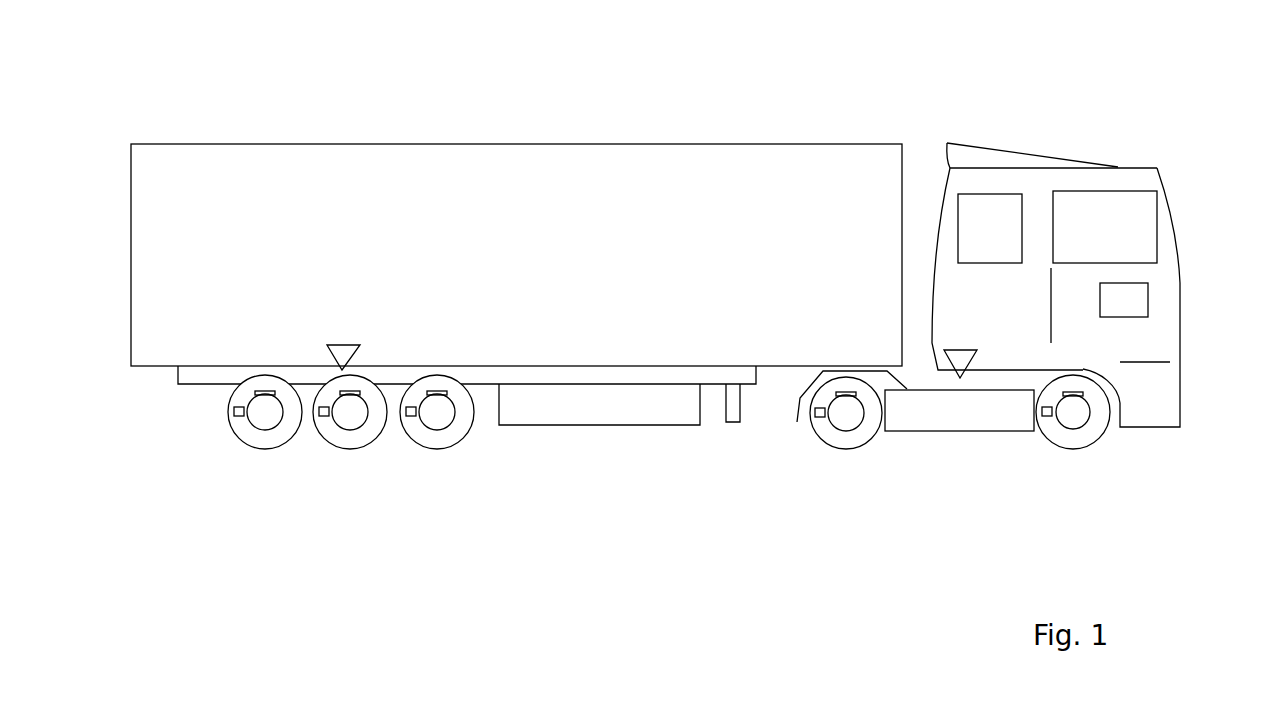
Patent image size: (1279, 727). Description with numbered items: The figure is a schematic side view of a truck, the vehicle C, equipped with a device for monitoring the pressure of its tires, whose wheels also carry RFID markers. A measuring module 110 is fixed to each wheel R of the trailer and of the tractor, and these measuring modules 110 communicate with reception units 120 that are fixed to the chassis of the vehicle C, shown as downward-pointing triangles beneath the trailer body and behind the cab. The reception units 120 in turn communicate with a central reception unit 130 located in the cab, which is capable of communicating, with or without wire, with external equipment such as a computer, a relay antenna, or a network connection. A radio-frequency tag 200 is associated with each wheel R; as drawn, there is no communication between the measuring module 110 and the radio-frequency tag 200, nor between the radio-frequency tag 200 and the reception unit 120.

The vehicle C is at (557, 130).
The wheel R is at (267, 447).
The measuring module 110 is at (263, 395).
The reception unit 120 is at (340, 355).
The radio-frequency tag 200 is at (240, 415).
The central reception unit 130 is at (1133, 308).